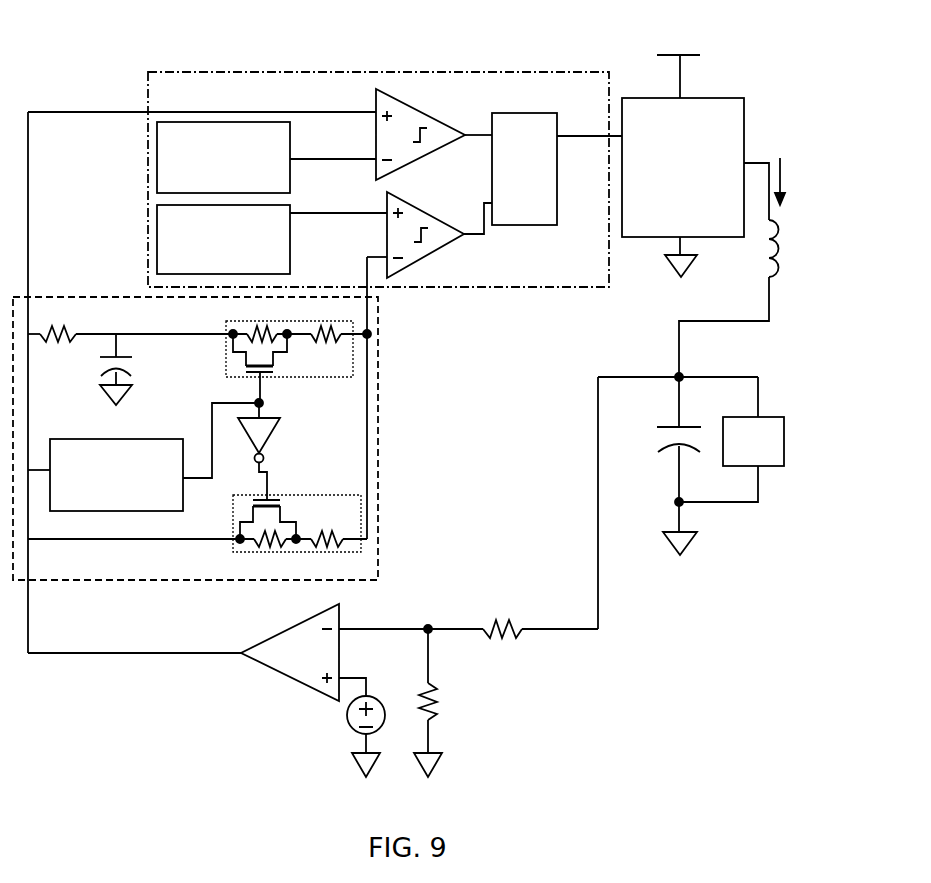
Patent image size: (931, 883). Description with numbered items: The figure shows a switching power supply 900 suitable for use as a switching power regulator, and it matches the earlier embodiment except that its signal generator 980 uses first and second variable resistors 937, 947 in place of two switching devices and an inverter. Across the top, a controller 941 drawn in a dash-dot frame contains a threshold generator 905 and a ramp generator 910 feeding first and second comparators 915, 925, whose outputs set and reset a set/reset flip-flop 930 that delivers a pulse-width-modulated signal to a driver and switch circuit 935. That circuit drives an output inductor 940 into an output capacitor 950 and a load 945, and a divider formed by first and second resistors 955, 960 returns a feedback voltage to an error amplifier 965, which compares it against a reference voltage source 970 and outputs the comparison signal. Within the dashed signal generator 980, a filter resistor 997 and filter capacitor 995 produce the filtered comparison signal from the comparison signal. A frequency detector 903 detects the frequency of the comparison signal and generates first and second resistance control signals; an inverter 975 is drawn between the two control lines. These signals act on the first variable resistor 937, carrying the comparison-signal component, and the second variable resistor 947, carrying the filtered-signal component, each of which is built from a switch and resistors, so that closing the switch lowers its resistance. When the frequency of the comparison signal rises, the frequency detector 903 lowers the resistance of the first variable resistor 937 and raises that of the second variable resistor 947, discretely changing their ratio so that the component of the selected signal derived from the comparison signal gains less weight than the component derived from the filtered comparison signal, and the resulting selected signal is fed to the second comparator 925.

The switching power supply 900 is at (67, 71).
The frequency detector 903 is at (184, 510).
The threshold generator 905 is at (292, 183).
The ramp generator 910 is at (292, 266).
The first comparator 915 is at (415, 166).
The second comparator 925 is at (424, 262).
The SR latch 930 is at (534, 228).
The driver and switch circuit 935 is at (739, 85).
The first variable resistor 937 is at (337, 380).
The inductor L 940 is at (777, 282).
The PWM control block 941 is at (466, 289).
The load 945 is at (778, 416).
The second variable resistor 947 is at (303, 554).
The output capacitor C 950 is at (673, 419).
The feedback resistor R1 955 is at (519, 643).
The feedback resistor R2 960 is at (440, 718).
The error amplifier 965 is at (264, 682).
The reference voltage source VREF 970 is at (374, 740).
The inverter 975 is at (280, 437).
The signal generator 980 is at (379, 540).
The filter capacitor Cflt 995 is at (105, 385).
The filter resistor Rflt 997 is at (66, 352).